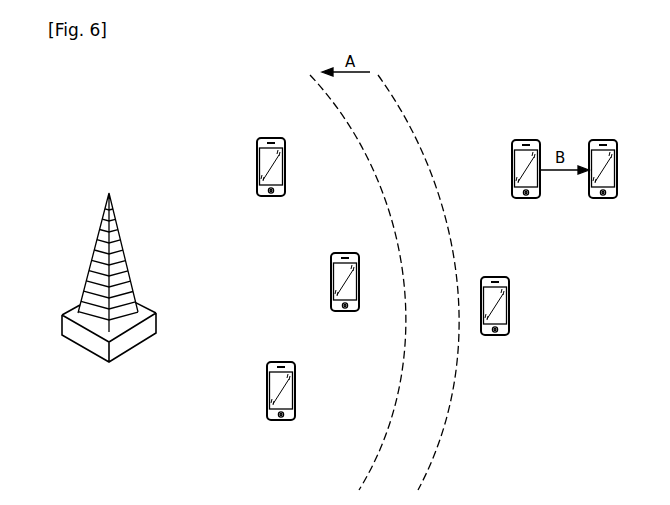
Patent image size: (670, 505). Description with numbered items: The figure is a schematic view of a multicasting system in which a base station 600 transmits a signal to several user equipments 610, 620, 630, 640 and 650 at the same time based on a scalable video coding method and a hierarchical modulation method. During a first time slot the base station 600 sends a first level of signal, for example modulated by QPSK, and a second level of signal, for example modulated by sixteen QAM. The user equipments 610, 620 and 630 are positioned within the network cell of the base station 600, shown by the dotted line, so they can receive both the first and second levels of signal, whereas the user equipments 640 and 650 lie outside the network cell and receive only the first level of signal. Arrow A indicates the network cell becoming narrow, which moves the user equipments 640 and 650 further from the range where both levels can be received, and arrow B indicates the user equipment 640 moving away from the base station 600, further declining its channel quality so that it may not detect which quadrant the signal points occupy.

The base station 600 is at (107, 197).
The user equipment 610 is at (271, 138).
The user equipment 620 is at (345, 253).
The user equipment 630 is at (281, 362).
The user equipment 640 is at (525, 140).
The user equipment 650 is at (495, 277).